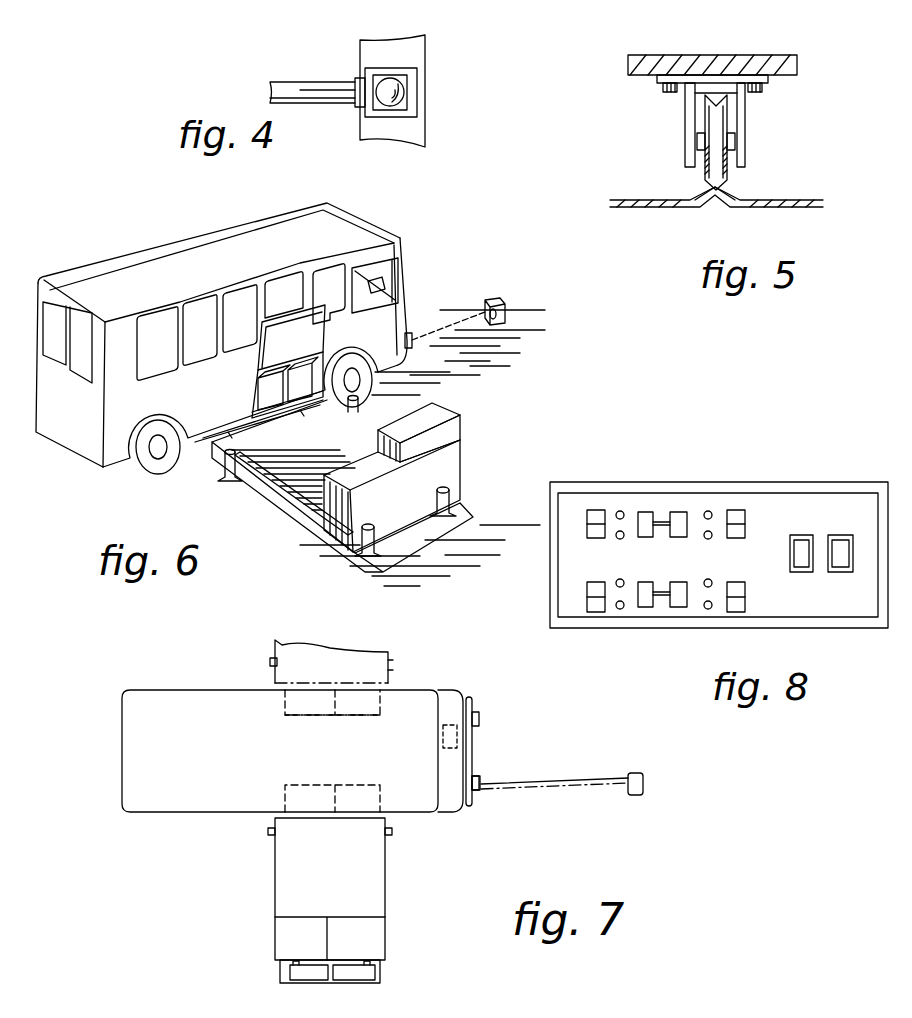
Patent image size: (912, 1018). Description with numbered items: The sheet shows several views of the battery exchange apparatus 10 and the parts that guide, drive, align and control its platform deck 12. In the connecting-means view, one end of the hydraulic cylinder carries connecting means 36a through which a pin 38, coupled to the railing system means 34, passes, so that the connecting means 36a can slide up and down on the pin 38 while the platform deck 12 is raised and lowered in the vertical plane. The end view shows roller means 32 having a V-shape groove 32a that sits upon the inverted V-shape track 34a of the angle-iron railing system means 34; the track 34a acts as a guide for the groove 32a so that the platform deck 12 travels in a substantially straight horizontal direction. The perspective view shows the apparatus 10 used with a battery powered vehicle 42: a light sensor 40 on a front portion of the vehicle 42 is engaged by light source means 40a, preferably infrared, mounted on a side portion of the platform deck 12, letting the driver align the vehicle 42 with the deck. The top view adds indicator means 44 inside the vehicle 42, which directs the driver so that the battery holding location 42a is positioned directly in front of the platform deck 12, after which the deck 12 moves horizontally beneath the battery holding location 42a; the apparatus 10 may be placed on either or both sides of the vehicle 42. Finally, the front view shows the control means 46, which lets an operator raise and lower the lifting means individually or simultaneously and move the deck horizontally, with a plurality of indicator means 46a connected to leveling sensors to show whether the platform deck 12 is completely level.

In FIG. 6, the apparatus 10 is at (294, 530).
In FIG. 5, the platform deck 12 is at (724, 56).
In FIG. 6, the platform deck 12 is at (252, 462).
In FIG. 7, the platform deck 12 is at (283, 671).
In FIG. 5, the roller means 32 is at (733, 160).
In FIG. 5, the V-shape groove 32a is at (712, 99).
In FIG. 5, the railing system means 34 is at (638, 201).
In FIG. 5, the inverted V-shape track 34a is at (720, 200).
In FIG. 4, the connecting means 36a is at (405, 67).
In FIG. 4, the pin 38 is at (396, 93).
In FIG. 6, the light sensor 40 is at (411, 340).
In FIG. 7, the light sensor 40 is at (479, 791).
In FIG. 6, the light source means 40a is at (495, 300).
In FIG. 7, the light source means 40a is at (636, 797).
In FIG. 6, the battery powered vehicle 42 is at (159, 257).
In FIG. 7, the battery powered vehicle 42 is at (198, 691).
In FIG. 7, the battery holding location 42a is at (347, 787).
In FIG. 7, the indicator means 44 is at (448, 725).
In FIG. 8, the control means 46 is at (695, 500).
In FIG. 8, the indicator means 46a is at (622, 511).